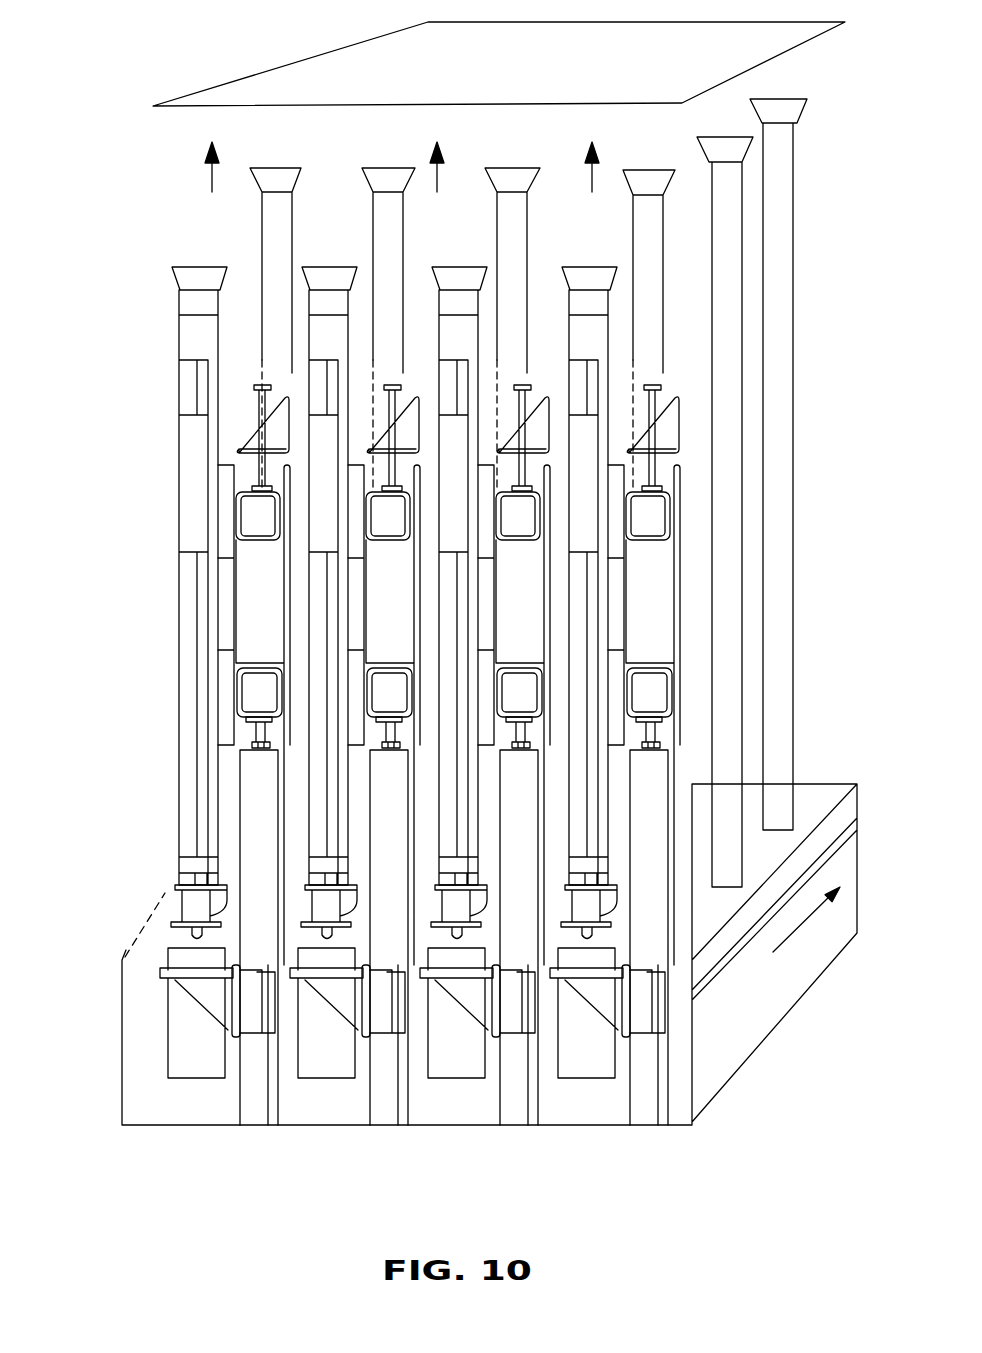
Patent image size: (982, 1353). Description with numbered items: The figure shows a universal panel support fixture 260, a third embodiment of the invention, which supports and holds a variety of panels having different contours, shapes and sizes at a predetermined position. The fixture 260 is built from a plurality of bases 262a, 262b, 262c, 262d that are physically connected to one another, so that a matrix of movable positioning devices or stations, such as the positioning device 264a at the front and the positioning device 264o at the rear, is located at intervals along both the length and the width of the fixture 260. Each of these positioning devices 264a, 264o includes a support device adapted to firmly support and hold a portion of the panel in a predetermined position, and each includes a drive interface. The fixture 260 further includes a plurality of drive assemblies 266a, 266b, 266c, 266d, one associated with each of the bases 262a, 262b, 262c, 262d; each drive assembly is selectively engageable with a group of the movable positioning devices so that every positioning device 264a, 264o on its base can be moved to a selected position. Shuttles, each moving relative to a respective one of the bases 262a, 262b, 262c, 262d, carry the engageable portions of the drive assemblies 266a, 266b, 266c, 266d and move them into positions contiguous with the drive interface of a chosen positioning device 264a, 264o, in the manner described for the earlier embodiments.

The universal panel support fixture 260 is at (145, 534).
The base 262a is at (175, 1150).
The base 262b is at (283, 1147).
The base 262c is at (457, 1160).
The base 262d is at (605, 1150).
The movable positioning device/station 264a is at (203, 274).
The movable positioning device/station 264o is at (273, 180).
The drive assembly 266a is at (195, 901).
The drive assembly 266b is at (328, 897).
The drive assembly 266c is at (458, 897).
The drive assembly 266d is at (600, 903).